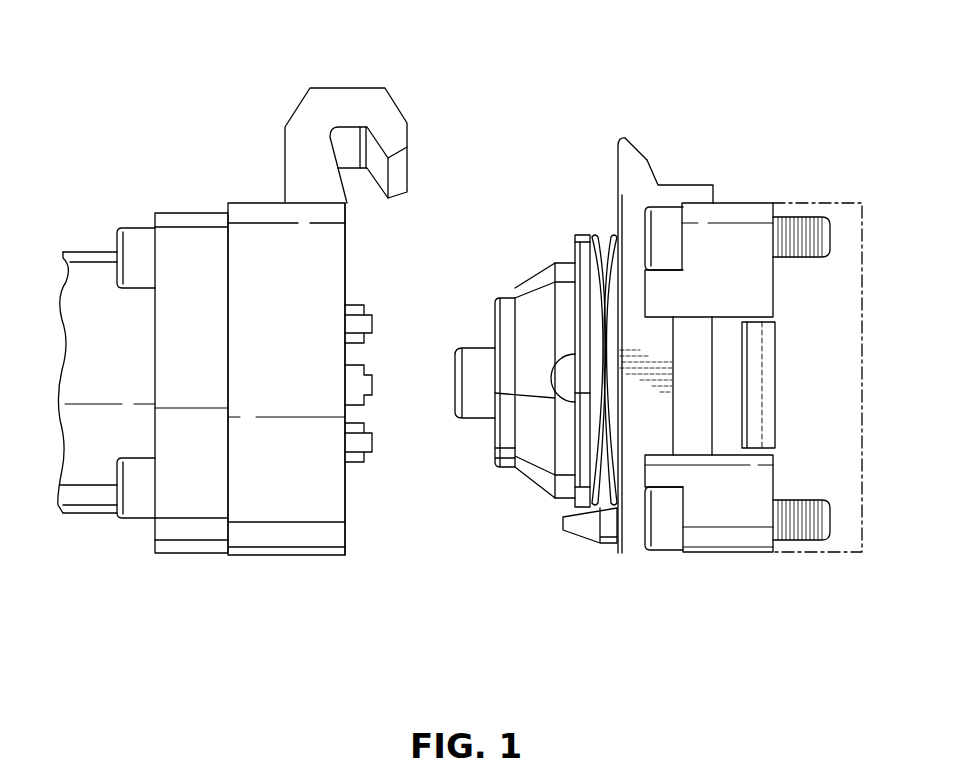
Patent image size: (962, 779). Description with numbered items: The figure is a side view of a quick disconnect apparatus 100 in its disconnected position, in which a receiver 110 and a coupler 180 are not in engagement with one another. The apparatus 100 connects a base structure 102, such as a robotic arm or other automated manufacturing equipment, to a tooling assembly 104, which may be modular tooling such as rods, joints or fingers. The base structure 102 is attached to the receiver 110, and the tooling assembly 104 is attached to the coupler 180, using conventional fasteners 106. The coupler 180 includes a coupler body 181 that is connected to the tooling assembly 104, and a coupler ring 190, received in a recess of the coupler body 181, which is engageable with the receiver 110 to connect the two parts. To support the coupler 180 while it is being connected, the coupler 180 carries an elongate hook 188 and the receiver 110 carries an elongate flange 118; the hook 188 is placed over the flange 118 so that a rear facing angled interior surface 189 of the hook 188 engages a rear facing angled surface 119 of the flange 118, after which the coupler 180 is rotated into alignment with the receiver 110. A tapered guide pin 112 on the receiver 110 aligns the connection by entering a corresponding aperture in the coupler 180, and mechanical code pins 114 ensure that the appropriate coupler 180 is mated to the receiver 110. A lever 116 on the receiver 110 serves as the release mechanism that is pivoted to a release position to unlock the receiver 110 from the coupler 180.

The quick disconnect apparatus 100 is at (112, 116).
The base structure 102 is at (818, 203).
The tooling assembly 104 is at (86, 252).
The fasteners 106 is at (135, 234).
The receiver 110 is at (740, 556).
The tapered guide pin 112 is at (586, 525).
The mechanical code pins 114 is at (372, 326).
The lever 116 is at (773, 394).
The elongate flange 118 is at (621, 138).
The rear facing angled surface 119 is at (648, 158).
The coupler 180 is at (232, 558).
The coupler body 181 is at (275, 556).
The elongate hook 188 is at (348, 88).
The rear facing angled interior surface 189 is at (377, 173).
The coupler ring 190 is at (348, 532).